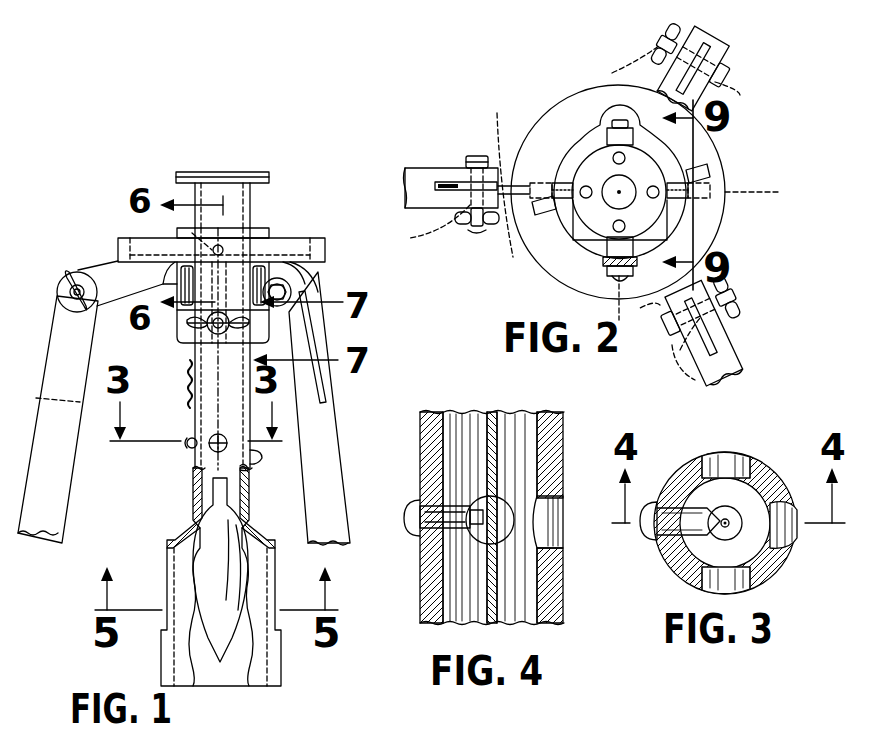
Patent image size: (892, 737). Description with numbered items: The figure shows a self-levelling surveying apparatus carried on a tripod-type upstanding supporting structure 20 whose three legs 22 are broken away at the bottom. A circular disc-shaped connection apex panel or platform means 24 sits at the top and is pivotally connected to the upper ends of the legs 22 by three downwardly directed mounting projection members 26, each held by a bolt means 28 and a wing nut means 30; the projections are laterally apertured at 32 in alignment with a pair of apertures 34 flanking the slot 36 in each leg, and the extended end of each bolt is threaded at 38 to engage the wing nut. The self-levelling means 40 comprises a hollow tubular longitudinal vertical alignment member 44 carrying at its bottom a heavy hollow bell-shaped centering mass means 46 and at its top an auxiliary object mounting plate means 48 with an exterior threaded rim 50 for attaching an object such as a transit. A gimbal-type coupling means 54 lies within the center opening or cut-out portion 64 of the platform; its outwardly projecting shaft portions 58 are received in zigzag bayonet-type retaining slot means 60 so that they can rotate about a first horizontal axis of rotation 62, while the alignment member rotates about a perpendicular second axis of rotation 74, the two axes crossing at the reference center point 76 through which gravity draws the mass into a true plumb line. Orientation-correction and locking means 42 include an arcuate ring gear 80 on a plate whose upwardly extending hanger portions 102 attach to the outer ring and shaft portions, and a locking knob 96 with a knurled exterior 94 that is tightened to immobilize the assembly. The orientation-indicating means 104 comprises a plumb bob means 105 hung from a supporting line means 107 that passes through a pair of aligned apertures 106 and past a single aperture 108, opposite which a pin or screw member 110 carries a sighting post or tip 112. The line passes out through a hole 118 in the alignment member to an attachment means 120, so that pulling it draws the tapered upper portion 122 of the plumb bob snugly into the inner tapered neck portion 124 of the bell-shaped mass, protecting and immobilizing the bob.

In FIG. 1, the tripod-type upstanding supporting structure 20 is at (352, 403).
In FIG. 1, the legs 22 is at (42, 545).
In FIG. 2, the legs 22 is at (440, 168).
In FIG. 1, the connection apex panel or platform means 24 is at (325, 250).
In FIG. 2, the connection apex panel or platform means 24 is at (712, 152).
In FIG. 1, the mounting projection members 26 is at (98, 270).
In FIG. 2, the mounting projection members 26 is at (672, 290).
In FIG. 1, the bolt means 28 is at (290, 283).
In FIG. 2, the bolt means 28 is at (478, 156).
In FIG. 1, the wing nut means 30 is at (64, 275).
In FIG. 2, the wing nut means 30 is at (490, 226).
In FIG. 2, the lateral apertures of mounting projections 32 is at (498, 118).
In FIG. 2, the laterally-directed apertures 34 is at (586, 199).
In FIG. 1, the slot 36 is at (324, 396).
In FIG. 2, the slot 36 is at (450, 182).
In FIG. 2, the threaded end of bolt 38 is at (468, 230).
In FIG. 1, the self-levelling means 40 is at (175, 488).
In FIG. 4, the self-levelling means 40 is at (400, 608).
In FIG. 1, the orientation-correction means and locking means 42 is at (162, 333).
In FIG. 1, the longitudinal vertical alignment member 44 is at (195, 435).
In FIG. 4, the longitudinal vertical alignment member 44 is at (563, 425).
In FIG. 3, the longitudinal vertical alignment member 44 is at (700, 470).
In FIG. 1, the centering mass means 46 is at (156, 551).
In FIG. 1, the auxiliary object mounting plate means 48 is at (250, 172).
In FIG. 2, the auxiliary object mounting plate means 48 is at (622, 165).
In FIG. 1, the exterior threaded rim 50 is at (176, 174).
In FIG. 2, the gimbal-type coupling means 54 is at (568, 160).
In FIG. 2, the outwardly projecting shaft portions 58 is at (712, 215).
In FIG. 2, the retaining slot means 60 is at (712, 200).
In FIG. 2, the first horizontal axis of rotation 62 is at (762, 192).
In FIG. 2, the center opening or cut-out portion 64 is at (572, 170).
In FIG. 2, the second axis of rotation 74 is at (616, 310).
In FIG. 2, the reference center point 76 is at (619, 192).
In FIG. 1, the ring gear 80 is at (183, 343).
In FIG. 1, the knurled exterior of locking knob 94 is at (192, 736).
In FIG. 1, the locking knob 96 is at (230, 732).
In FIG. 1, the hanger portions 102 is at (181, 280).
In FIG. 1, the orientation-indicating means 104 is at (180, 448).
In FIG. 3, the orientation-indicating means 104 is at (640, 568).
In FIG. 1, the plumb bob means 105 is at (228, 638).
In FIG. 1, the pair of aligned apertures 106 is at (228, 444).
In FIG. 4, the pair of aligned apertures 106 is at (505, 510).
In FIG. 3, the pair of aligned apertures 106 is at (728, 470).
In FIG. 1, the supporting line means 107 is at (249, 471).
In FIG. 4, the supporting line means 107 is at (497, 430).
In FIG. 3, the supporting line means 107 is at (728, 522).
In FIG. 1, the single aperture 108 is at (252, 455).
In FIG. 4, the single aperture 108 is at (548, 520).
In FIG. 3, the single aperture 108 is at (790, 540).
In FIG. 1, the pin or screw member 110 is at (188, 450).
In FIG. 4, the pin or screw member 110 is at (412, 536).
In FIG. 3, the pin or screw member 110 is at (645, 540).
In FIG. 4, the sighting post or tip 112 is at (440, 545).
In FIG. 3, the sighting post or tip 112 is at (705, 540).
In FIG. 1, the hole 118 is at (190, 228).
In FIG. 1, the attachment means 120 is at (185, 388).
In FIG. 1, the tapered upper portion of plumb bob 122 is at (250, 545).
In FIG. 1, the inner tapered neck portion 124 is at (240, 530).